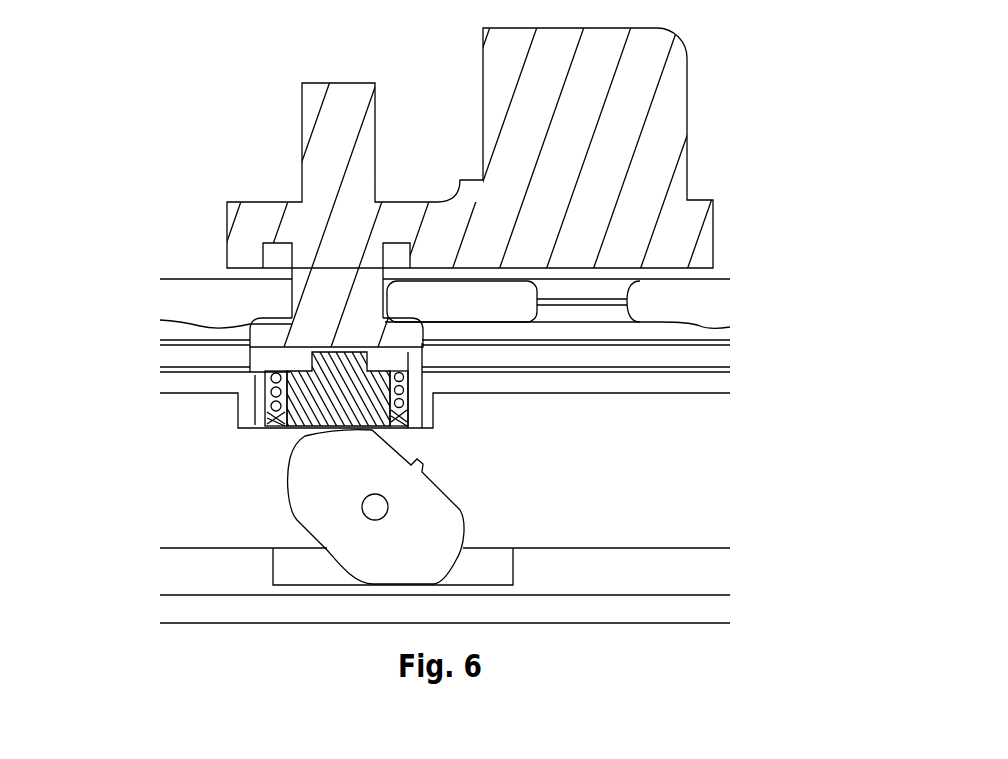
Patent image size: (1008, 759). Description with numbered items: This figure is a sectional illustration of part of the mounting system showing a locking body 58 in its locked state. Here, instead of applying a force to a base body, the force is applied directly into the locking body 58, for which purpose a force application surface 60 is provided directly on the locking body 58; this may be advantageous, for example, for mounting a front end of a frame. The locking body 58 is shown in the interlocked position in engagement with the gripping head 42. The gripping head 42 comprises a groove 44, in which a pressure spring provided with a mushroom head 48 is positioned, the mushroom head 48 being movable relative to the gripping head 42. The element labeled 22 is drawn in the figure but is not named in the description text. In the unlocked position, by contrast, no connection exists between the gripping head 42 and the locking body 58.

The locking body 58 is at (312, 308).
The gripping head 42 is at (257, 375).
The groove 44 is at (280, 422).
The mushroom head 48 is at (320, 428).
The force application surface 60 is at (422, 325).
The cam roller 22 is at (455, 522).